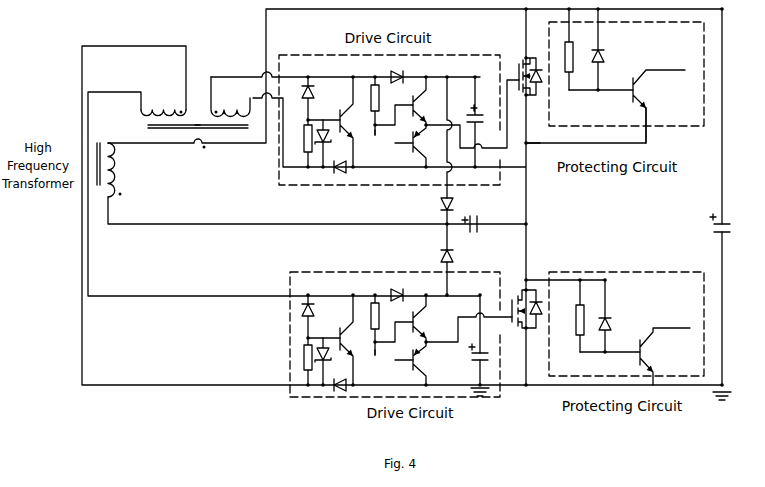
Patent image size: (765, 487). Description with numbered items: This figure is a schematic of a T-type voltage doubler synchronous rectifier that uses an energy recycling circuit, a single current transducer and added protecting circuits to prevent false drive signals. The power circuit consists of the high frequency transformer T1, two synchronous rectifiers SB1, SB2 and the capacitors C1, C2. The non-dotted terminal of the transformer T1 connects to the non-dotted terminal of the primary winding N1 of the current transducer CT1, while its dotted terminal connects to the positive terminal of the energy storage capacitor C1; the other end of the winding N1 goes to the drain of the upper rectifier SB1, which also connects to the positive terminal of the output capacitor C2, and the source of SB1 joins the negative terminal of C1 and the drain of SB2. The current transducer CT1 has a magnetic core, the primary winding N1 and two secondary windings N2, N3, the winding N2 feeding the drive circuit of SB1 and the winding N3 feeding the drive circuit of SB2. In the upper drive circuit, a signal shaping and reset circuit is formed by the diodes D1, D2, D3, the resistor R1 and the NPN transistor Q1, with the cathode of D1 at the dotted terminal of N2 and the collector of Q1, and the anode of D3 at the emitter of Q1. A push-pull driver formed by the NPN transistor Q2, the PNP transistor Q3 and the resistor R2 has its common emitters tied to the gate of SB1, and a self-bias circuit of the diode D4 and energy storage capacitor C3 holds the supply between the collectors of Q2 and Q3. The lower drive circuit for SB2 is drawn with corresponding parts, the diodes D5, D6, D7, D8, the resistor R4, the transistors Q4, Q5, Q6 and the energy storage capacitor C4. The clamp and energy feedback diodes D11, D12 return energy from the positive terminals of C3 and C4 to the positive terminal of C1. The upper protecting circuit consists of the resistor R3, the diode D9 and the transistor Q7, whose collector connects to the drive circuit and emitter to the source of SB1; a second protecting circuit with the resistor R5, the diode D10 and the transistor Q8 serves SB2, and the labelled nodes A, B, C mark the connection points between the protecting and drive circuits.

The high frequency transformer T1 is at (169, 153).
The primary winding N1 is at (157, 170).
The secondary winding N2 is at (230, 97).
The secondary winding N3 is at (163, 106).
The current transducer CT1 is at (200, 116).
The diode D1 is at (317, 98).
The diode D2 is at (328, 143).
The diode D3 is at (341, 160).
The diode D4 is at (397, 84).
The diode D5 is at (317, 316).
The zener diode D6 is at (328, 361).
The diode D7 is at (341, 378).
The diode D8 is at (397, 302).
The diode D9 is at (607, 49).
The diode D10 is at (617, 316).
The diode D11 is at (456, 204).
The diode D12 is at (456, 258).
The resistor R1 is at (299, 143).
The resistor R2 is at (370, 106).
The resistor R3 is at (577, 49).
The resistor R4 is at (301, 361).
The resistor R5 is at (473, 317).
The NPN transistor Q1 is at (351, 122).
The NPN transistor Q2 is at (411, 101).
The PNP transistor Q3 is at (411, 146).
The transistor Q4 is at (352, 340).
The transistor Q5 is at (411, 318).
The transistor Q6 is at (411, 363).
The transistor Q7 is at (663, 104).
The protecting transistor Q8 is at (670, 355).
The energy storage capacitor C1 is at (478, 221).
The output capacitor C2 is at (725, 230).
The energy storage capacitor C3 is at (481, 122).
The energy storage capacitor C4 is at (483, 357).
The synchronous rectifier SB1 is at (526, 85).
The synchronous rectifier SB2 is at (526, 318).
The node A is at (533, 149).
The node B is at (375, 140).
The node C is at (374, 359).